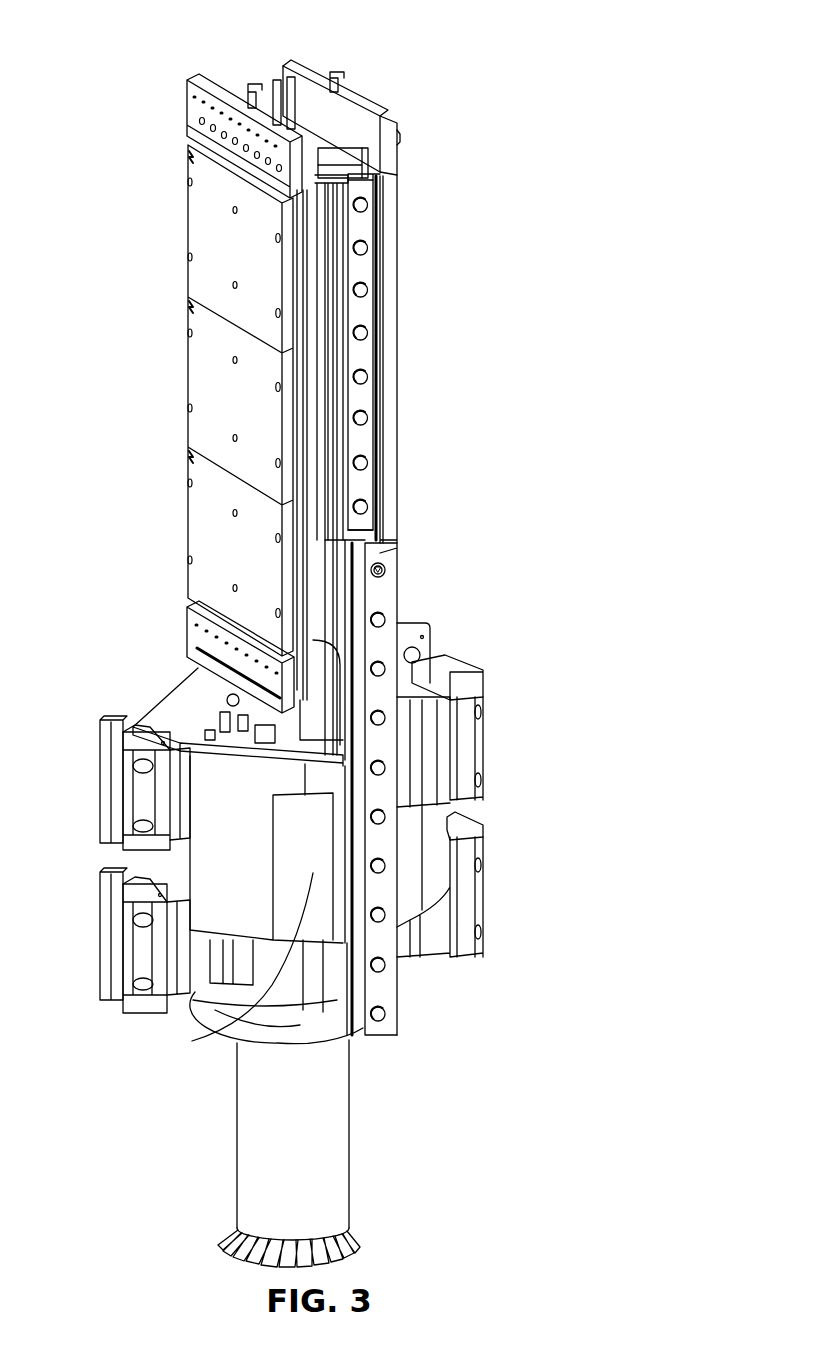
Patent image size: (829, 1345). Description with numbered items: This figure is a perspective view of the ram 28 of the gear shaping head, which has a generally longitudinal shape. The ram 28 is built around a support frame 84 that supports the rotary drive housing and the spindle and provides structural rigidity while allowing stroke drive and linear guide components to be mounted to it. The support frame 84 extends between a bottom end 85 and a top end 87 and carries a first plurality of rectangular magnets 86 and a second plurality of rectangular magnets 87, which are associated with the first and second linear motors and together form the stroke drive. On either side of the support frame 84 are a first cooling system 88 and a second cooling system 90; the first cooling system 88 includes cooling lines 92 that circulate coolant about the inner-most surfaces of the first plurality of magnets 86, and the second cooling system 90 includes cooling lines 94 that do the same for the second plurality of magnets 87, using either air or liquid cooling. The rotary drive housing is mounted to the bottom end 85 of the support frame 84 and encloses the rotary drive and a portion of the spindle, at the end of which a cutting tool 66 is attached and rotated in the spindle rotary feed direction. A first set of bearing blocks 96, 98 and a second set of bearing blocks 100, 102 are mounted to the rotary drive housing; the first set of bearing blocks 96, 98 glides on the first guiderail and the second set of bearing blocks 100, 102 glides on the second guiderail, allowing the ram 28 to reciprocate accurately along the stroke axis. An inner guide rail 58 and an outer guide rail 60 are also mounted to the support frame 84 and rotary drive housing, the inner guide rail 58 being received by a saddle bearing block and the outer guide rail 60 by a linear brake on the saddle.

The ram 28 is at (568, 651).
The inner guide rail 58 is at (363, 357).
The outer guide rail 60 is at (389, 594).
The cutting tool 66 is at (352, 1234).
The support frame 84 is at (348, 158).
The bottom end 85 is at (232, 698).
The first plurality of rectangular magnets 86 is at (398, 275).
The second plurality of rectangular magnets 87 is at (322, 157).
The first cooling system 88 is at (410, 126).
The second cooling system 90 is at (268, 174).
The cooling lines 92 is at (382, 208).
The cooling lines 94 is at (297, 273).
The bearing block 96 is at (478, 745).
The bearing block 98 is at (478, 899).
The bearing block 100 is at (123, 796).
The bearing block 102 is at (123, 948).